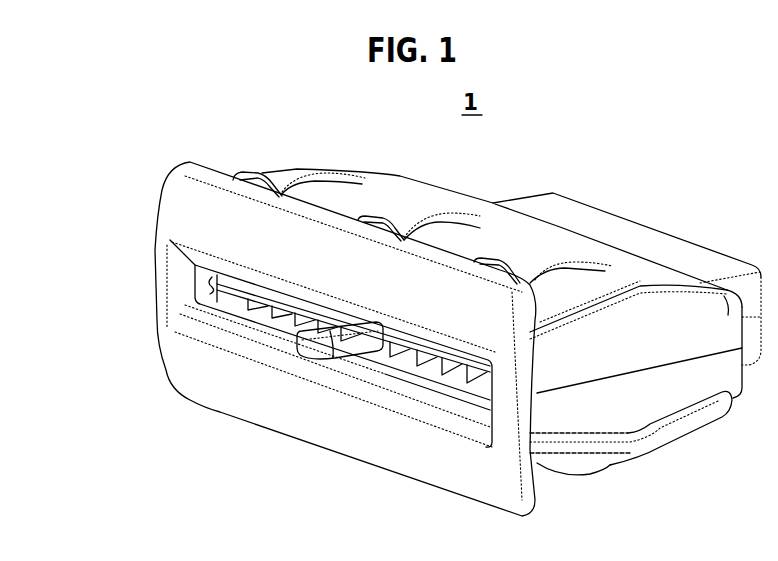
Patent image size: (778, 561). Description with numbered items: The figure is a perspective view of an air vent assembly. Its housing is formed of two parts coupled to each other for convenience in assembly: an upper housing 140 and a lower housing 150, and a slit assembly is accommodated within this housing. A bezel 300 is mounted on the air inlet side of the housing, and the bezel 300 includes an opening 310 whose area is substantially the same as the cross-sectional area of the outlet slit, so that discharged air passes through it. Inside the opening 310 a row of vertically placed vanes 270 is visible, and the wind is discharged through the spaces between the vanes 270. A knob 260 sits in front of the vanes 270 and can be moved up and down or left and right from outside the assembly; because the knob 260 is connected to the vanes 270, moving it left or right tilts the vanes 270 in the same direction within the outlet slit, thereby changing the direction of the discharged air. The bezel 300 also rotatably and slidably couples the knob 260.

The upper housing 140 is at (633, 253).
The lower housing 150 is at (647, 417).
The knob 260 is at (317, 347).
The vanes 270 is at (452, 368).
The bezel 300 is at (215, 391).
The opening 310 is at (210, 292).